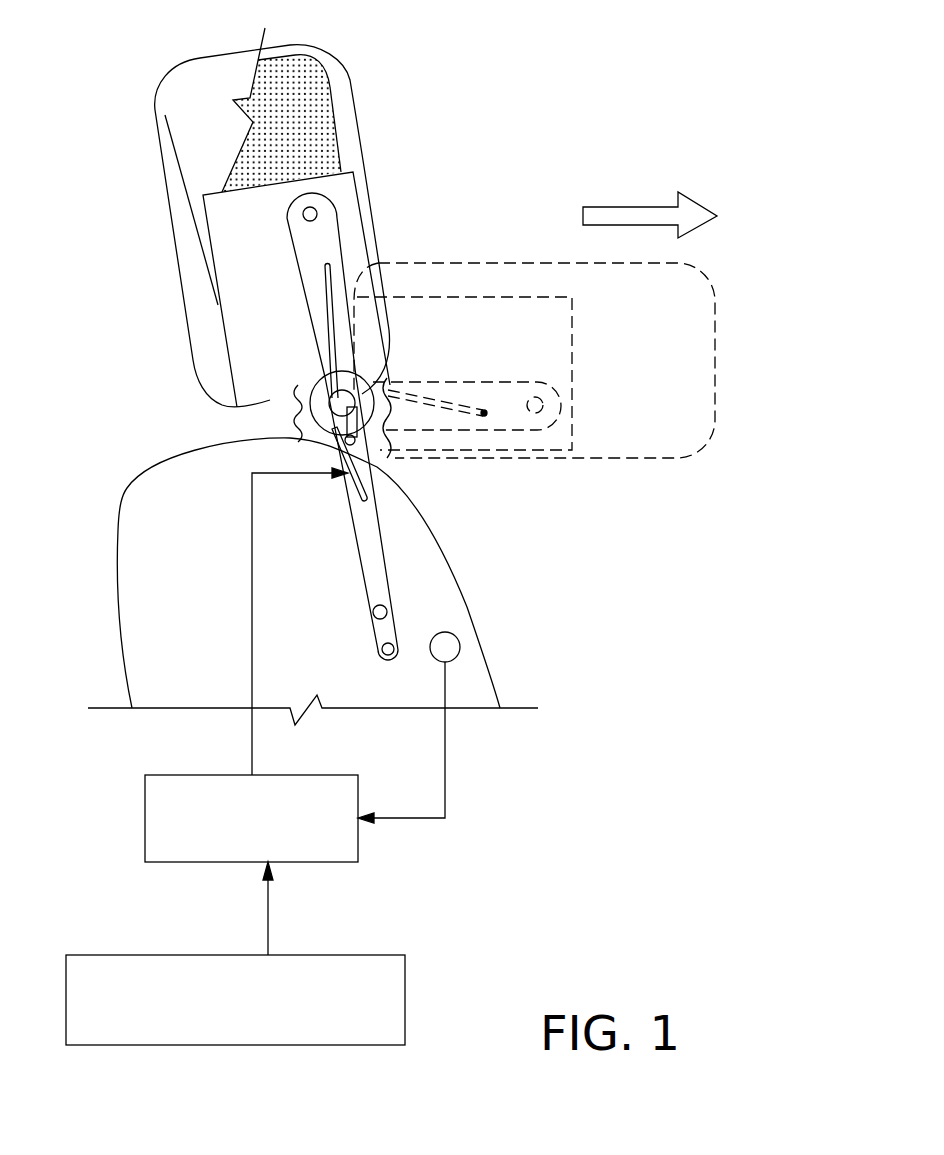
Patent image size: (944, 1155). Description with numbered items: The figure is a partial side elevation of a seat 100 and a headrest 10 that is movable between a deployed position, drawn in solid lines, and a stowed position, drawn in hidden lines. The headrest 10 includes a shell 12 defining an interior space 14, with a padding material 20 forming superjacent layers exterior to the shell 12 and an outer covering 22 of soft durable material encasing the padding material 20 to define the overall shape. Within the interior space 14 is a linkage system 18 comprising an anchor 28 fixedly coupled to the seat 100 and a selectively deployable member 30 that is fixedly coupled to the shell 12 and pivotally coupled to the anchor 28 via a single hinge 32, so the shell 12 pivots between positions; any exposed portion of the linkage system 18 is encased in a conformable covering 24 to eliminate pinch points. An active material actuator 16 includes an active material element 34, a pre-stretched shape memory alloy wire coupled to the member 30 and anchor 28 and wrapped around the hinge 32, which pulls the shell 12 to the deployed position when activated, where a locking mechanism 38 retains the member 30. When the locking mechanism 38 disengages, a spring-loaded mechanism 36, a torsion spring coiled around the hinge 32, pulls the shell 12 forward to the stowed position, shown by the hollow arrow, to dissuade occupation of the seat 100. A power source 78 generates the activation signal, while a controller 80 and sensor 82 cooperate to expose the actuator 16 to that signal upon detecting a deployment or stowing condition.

The headrest 10 is at (405, 91).
The shell 12 is at (170, 205).
The interior space 14 is at (257, 256).
The active material actuator 16 is at (338, 392).
The linkage system 18 is at (352, 219).
The padding material 20 is at (245, 150).
The outer covering 22 is at (185, 117).
The conformable covering 24 is at (300, 410).
The anchor 28 is at (382, 528).
The selectively deployable member 30 is at (340, 247).
The hinge 32 is at (313, 396).
The active material element 34 is at (308, 345).
The spring-loaded mechanism 36 is at (350, 400).
The locking mechanism 38 is at (350, 423).
The power source 78 is at (275, 1013).
The controller 80 is at (272, 835).
The sensor 82 is at (448, 632).
The seat 100 is at (125, 488).